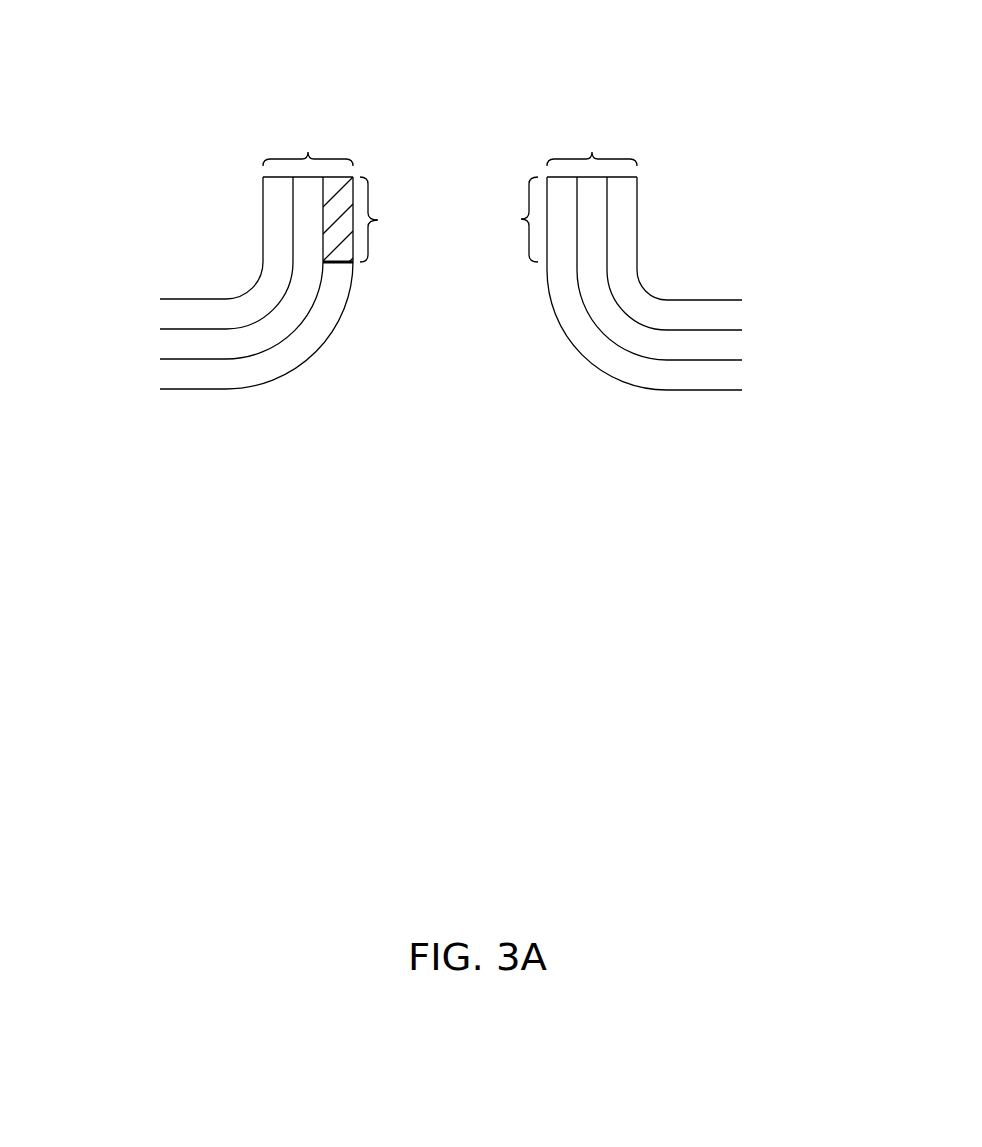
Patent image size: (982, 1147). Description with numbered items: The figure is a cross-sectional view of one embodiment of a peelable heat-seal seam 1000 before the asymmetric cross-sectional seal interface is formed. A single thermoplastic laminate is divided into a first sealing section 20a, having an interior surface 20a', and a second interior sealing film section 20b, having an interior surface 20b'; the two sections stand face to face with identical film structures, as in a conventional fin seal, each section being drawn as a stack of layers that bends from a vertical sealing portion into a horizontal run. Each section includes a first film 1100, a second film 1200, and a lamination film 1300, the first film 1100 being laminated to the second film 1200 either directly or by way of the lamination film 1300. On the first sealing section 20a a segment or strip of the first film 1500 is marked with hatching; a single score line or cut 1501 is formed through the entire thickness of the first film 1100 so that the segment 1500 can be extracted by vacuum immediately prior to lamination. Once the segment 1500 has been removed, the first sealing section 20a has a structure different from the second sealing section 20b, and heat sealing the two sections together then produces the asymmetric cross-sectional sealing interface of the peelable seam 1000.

The peelable seam 1000 is at (480, 42).
The first film 1100 is at (223, 373).
The second film 1200 is at (210, 308).
The lamination film 1300 is at (187, 345).
The segment of the first film 1500 is at (360, 263).
The score line or cut 1501 is at (341, 281).
The first sealing section 20a is at (308, 142).
The interior surface of first sealing section 20a' is at (396, 219).
The second sealing section 20b is at (592, 142).
The interior surface of second sealing section 20b' is at (504, 219).